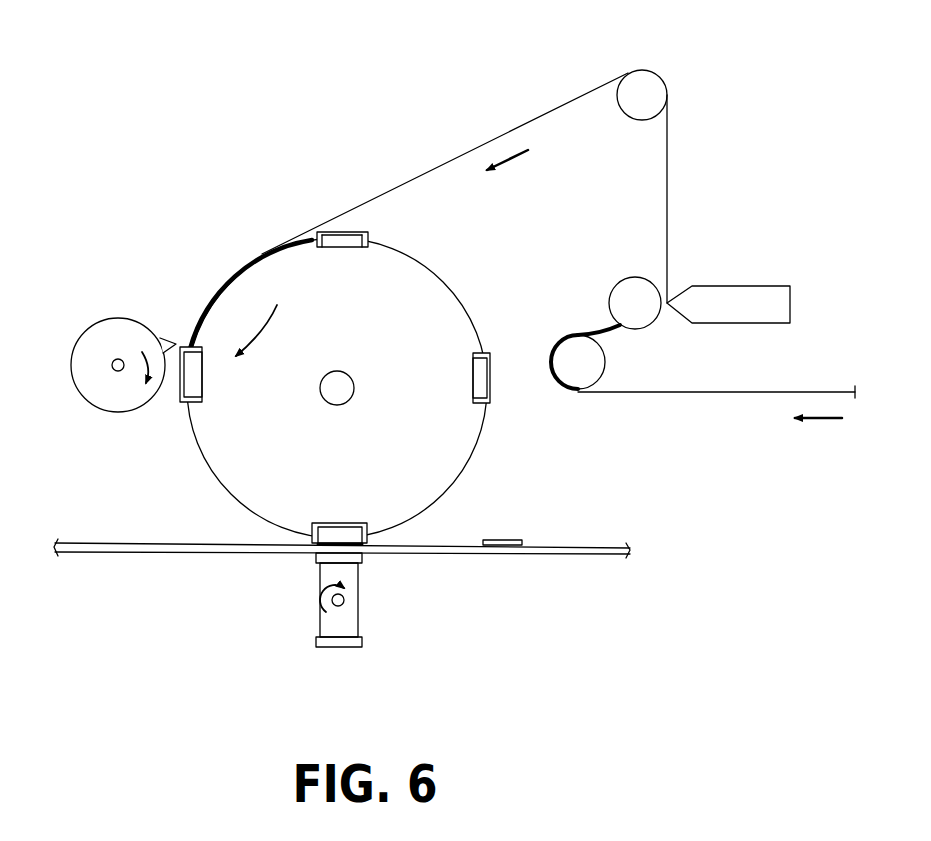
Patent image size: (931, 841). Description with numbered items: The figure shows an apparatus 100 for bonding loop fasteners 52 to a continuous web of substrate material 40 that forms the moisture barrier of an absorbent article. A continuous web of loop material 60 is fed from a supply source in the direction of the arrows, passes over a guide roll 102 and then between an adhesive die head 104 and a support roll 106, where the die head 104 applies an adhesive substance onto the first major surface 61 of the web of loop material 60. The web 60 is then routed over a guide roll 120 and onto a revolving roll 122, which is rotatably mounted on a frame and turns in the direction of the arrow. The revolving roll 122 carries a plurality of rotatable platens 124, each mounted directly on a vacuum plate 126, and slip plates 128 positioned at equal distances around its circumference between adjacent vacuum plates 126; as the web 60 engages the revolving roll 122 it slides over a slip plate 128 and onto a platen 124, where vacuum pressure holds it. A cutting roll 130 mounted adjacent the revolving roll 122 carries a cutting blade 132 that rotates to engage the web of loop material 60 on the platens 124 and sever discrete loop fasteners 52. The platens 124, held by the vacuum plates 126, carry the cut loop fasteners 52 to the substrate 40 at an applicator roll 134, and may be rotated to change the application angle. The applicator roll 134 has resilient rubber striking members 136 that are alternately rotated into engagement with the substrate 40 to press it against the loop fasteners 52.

The apparatus 100 is at (202, 196).
The continuous web of loop material 60 is at (493, 138).
The first major surface 61 is at (668, 176).
The guide roll 120 is at (628, 113).
The support roll 106 is at (612, 297).
The adhesive die head 104 is at (738, 286).
The guide roll 102 is at (606, 362).
The rotatable platen 124 is at (360, 232).
The vacuum plate 126 is at (311, 244).
The slip plate 128 is at (233, 270).
The revolving roll 122 is at (183, 446).
The cutting blade 132 is at (173, 341).
The cutting roll 130 is at (72, 357).
The continuous web of substrate material 40 is at (77, 554).
The loop fastener 52 is at (507, 540).
The applicator roll 134 is at (362, 618).
The striking member 136 is at (366, 557).